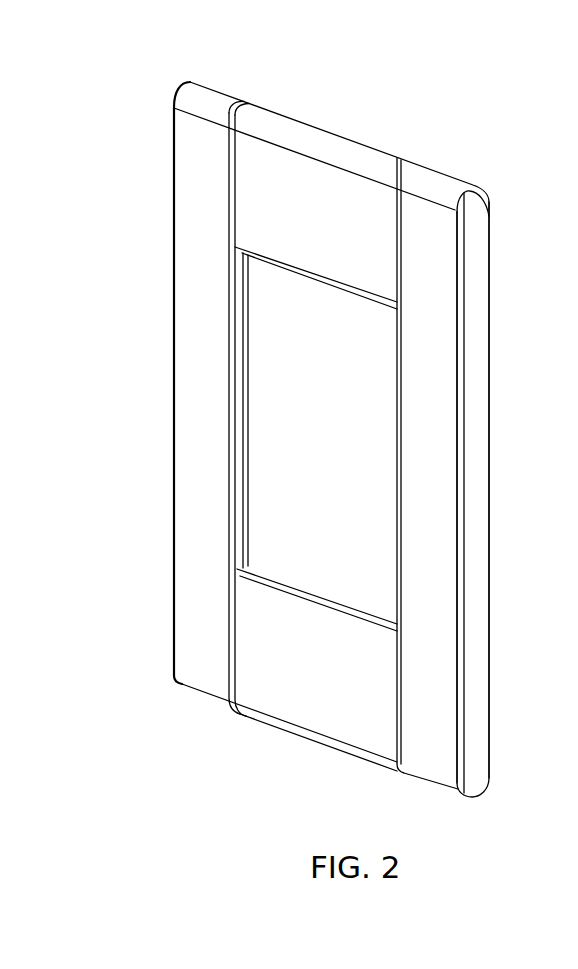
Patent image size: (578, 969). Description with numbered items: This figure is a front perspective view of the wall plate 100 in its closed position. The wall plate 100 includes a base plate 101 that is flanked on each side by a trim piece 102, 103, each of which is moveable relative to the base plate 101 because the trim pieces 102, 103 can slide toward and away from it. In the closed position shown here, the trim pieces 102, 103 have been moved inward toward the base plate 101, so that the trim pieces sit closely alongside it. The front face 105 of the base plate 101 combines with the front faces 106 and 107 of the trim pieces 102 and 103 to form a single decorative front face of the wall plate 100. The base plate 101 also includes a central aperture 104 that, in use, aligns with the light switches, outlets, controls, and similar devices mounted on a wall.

The wall plate 100 is at (415, 112).
The base plate 101 is at (329, 136).
The trim piece 102 is at (203, 92).
The trim piece 103 is at (448, 186).
The central aperture 104 is at (335, 454).
The front face 105 is at (273, 693).
The front face 106 is at (195, 392).
The front face 107 is at (445, 442).